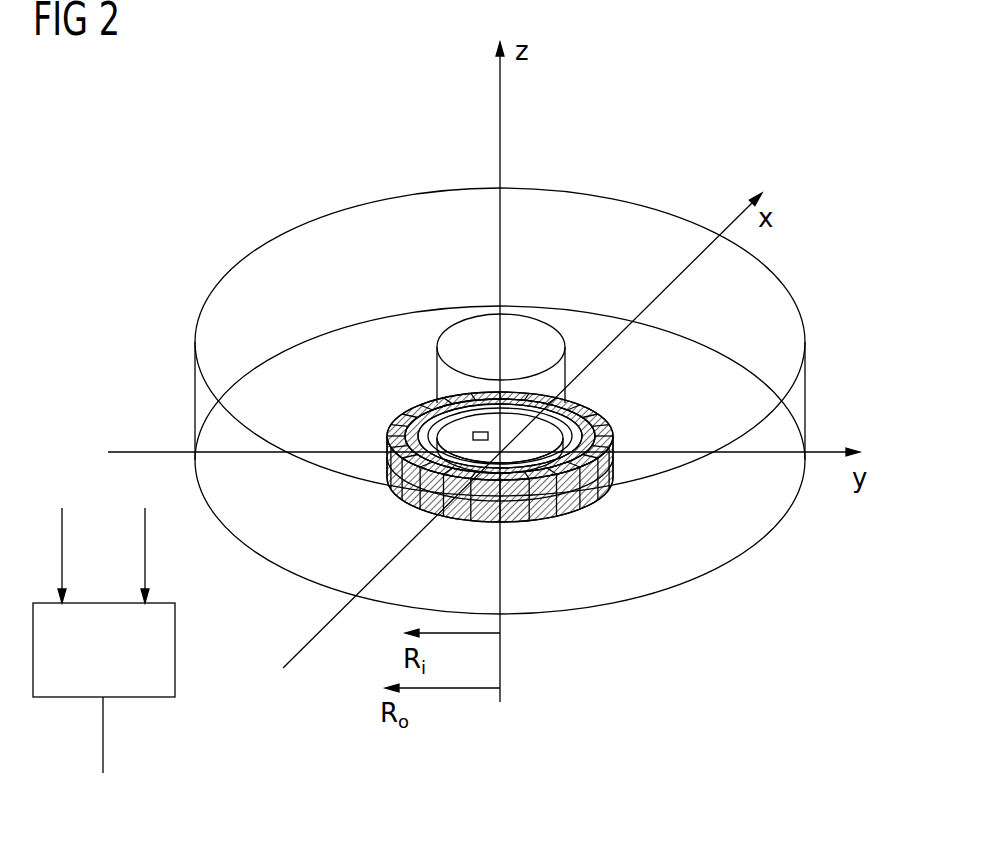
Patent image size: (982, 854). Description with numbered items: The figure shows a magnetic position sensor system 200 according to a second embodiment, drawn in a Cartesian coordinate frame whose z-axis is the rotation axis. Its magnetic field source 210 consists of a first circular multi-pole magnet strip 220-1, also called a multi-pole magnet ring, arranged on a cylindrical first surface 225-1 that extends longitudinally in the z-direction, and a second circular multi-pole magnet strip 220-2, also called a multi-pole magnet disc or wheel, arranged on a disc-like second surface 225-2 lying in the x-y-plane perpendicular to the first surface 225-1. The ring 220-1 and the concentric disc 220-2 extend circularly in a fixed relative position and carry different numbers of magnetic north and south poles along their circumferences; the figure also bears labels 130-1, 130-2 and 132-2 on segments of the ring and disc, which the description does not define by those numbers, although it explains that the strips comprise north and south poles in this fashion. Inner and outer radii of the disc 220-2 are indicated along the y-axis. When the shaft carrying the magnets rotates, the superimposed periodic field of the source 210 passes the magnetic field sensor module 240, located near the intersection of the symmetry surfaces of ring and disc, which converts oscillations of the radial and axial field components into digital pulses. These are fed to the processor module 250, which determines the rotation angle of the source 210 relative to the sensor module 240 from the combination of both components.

The magnetic position sensor system 200 is at (333, 115).
The magnetic field source 210 is at (500, 485).
The first circular multi-pole magnet strip 220-1 is at (513, 392).
The second circular multi-pole magnet strip 220-2 is at (560, 516).
The first surface 225-1 is at (611, 375).
The second surface 225-2 is at (627, 601).
The first magnetic field sensor element 130-1 is at (583, 412).
The second magnetic field sensor element 130-2 is at (608, 447).
The sensor element 132-2 is at (608, 480).
The magnetic field sensor module 240 is at (483, 430).
The processor module 250 is at (175, 649).